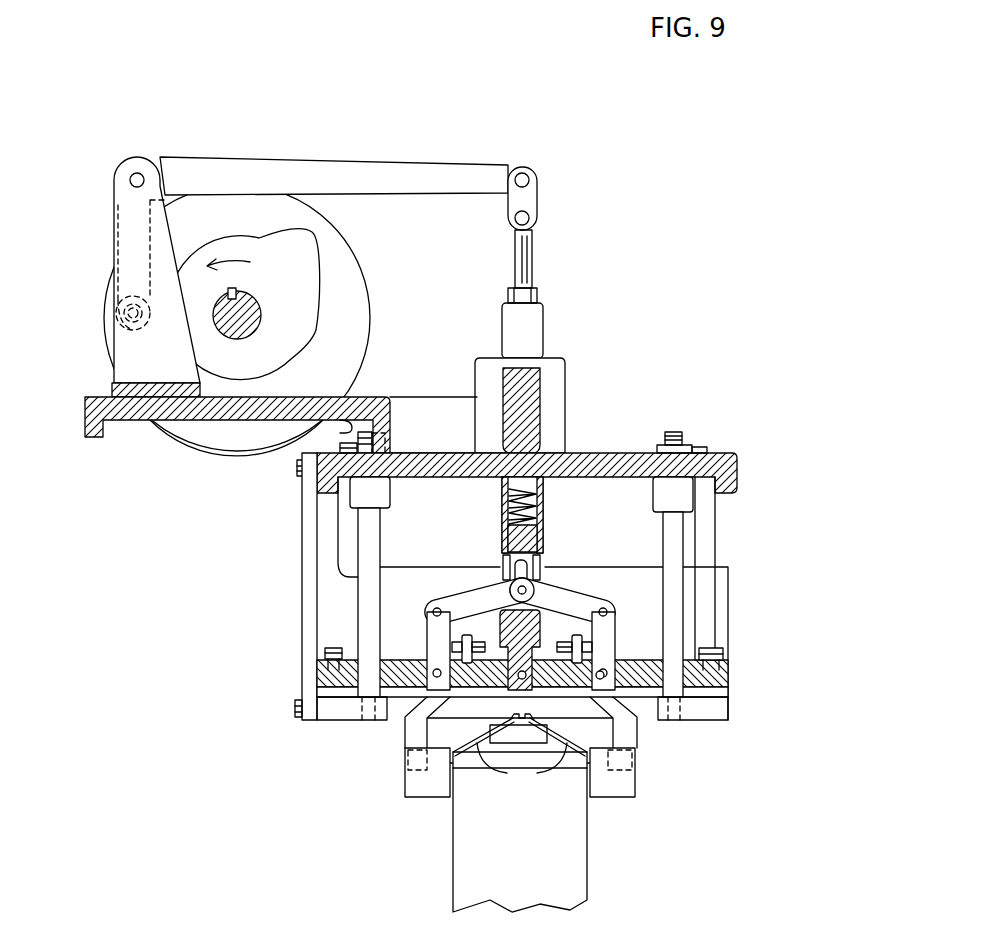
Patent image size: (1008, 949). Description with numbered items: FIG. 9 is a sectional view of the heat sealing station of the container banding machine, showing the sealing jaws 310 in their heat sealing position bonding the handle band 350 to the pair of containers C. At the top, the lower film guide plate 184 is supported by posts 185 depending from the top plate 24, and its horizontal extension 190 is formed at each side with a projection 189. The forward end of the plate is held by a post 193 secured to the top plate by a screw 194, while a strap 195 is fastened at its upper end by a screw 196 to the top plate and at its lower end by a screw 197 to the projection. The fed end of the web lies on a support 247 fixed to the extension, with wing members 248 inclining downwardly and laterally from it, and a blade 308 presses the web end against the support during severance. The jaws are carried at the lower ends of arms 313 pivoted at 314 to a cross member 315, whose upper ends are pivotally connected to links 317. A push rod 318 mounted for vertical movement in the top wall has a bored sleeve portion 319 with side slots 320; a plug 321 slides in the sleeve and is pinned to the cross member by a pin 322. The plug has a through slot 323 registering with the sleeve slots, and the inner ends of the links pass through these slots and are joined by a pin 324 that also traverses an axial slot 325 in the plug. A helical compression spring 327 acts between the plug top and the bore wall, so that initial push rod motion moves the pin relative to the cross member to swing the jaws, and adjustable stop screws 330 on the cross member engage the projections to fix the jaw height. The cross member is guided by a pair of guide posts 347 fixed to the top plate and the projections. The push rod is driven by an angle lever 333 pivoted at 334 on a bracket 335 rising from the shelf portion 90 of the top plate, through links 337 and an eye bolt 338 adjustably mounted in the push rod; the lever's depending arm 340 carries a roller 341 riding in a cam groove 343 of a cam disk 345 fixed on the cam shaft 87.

The top plate 24 is at (574, 458).
The cam shaft 87 is at (243, 300).
The shelf portion 90 is at (146, 416).
The lower film guide plate 184 is at (361, 729).
The posts 185 is at (343, 515).
The projections 189 is at (346, 716).
The horizontal extension of lower plate 190 is at (459, 718).
The post 193 is at (707, 634).
The screw 194 is at (691, 451).
The strap 195 is at (312, 599).
The screw 196 is at (297, 469).
The screw 197 is at (295, 708).
The support 247 is at (540, 740).
The wing members 248 is at (522, 767).
The blade 308 is at (527, 720).
The heating jaws 310 is at (411, 792).
The arms 313 is at (410, 738).
The pivot 314 is at (598, 678).
The cross member 315 is at (645, 670).
The links 317 is at (457, 616).
The push rod 318 is at (533, 345).
The sleeve portion 319 is at (545, 511).
The slot 320 is at (503, 579).
The plug 321 is at (530, 539).
The pin 322 is at (518, 678).
The slot 323 is at (505, 564).
The pin 324 is at (528, 592).
The axially extending slot 325 is at (540, 565).
The helical compression spring 327 is at (503, 498).
The adjustable stop screws 330 is at (722, 693).
The angle lever 333 is at (316, 194).
The pivot 334 is at (145, 180).
The bracket 335 is at (136, 366).
The links 337 is at (537, 211).
The eye bolt 338 is at (528, 275).
The depending arm 340 is at (118, 253).
The roller 341 is at (152, 312).
The cam groove 343 is at (316, 255).
The cam disk 345 is at (352, 274).
The guide posts 347 is at (379, 552).
The handle band 350 is at (459, 750).
The container C is at (515, 844).